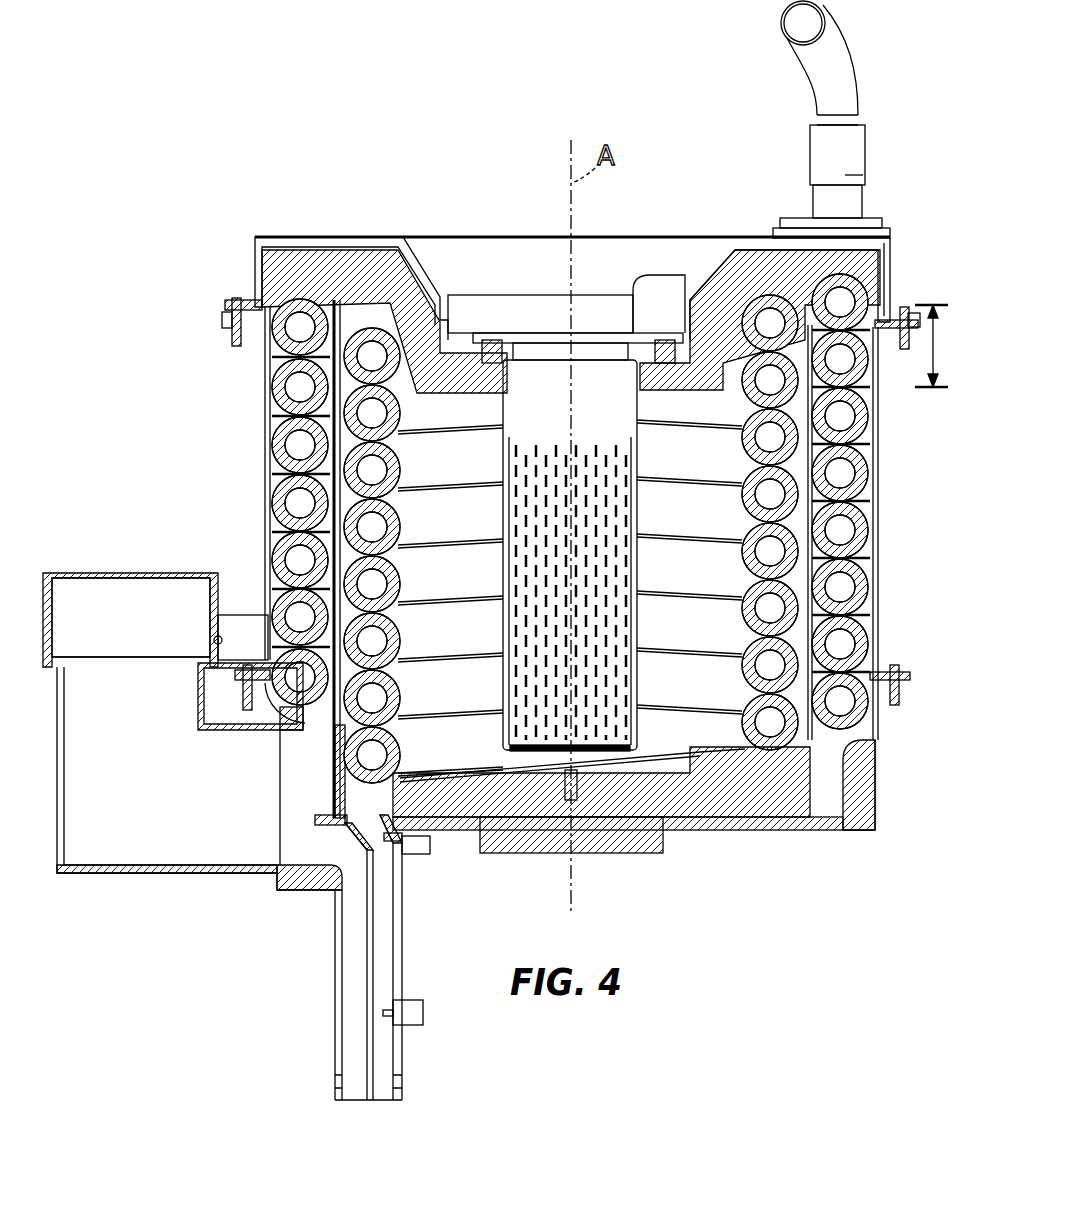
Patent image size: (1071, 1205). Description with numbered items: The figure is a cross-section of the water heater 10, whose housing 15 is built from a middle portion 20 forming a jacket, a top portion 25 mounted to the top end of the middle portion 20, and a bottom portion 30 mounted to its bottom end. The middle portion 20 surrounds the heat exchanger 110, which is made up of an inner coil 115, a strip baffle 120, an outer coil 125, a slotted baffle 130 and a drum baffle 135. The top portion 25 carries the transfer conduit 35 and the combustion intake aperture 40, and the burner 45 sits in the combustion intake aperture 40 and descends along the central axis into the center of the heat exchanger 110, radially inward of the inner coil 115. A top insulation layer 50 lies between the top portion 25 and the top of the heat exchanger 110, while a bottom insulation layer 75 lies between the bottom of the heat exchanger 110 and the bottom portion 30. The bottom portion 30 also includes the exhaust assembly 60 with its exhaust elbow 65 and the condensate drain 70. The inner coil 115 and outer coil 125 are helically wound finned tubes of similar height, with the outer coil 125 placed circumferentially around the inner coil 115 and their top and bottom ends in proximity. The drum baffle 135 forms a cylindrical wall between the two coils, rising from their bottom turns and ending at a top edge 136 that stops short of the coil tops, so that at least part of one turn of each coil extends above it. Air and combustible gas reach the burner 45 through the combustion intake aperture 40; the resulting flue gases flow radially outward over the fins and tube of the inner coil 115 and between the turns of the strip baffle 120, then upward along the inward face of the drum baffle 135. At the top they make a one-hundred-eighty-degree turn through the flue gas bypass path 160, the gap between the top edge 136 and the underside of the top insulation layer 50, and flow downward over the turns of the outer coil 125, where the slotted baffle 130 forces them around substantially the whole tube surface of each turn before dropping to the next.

The water heater 10 is at (388, 165).
The housing 15 is at (213, 387).
The middle portion 20 is at (267, 492).
The top portion 25 is at (252, 273).
The bottom portion 30 is at (848, 782).
The transfer conduit 35 is at (808, 68).
The combustion intake aperture 40 is at (448, 323).
The burner 45 is at (513, 380).
The top insulation layer 50 is at (337, 275).
The exhaust assembly 60 is at (178, 860).
The exhaust elbow 65 is at (63, 707).
The condensate drain 70 is at (400, 960).
The bottom insulation layer 75 is at (680, 800).
The heat exchanger 110 is at (712, 735).
The inner coil 115 is at (787, 470).
The strip baffle 120 is at (795, 527).
The outer coil 125 is at (805, 555).
The slotted baffle 130 is at (803, 585).
The drum baffle 135 is at (800, 632).
The top edge 136 is at (800, 300).
The flue gas bypass path 160 is at (953, 302).